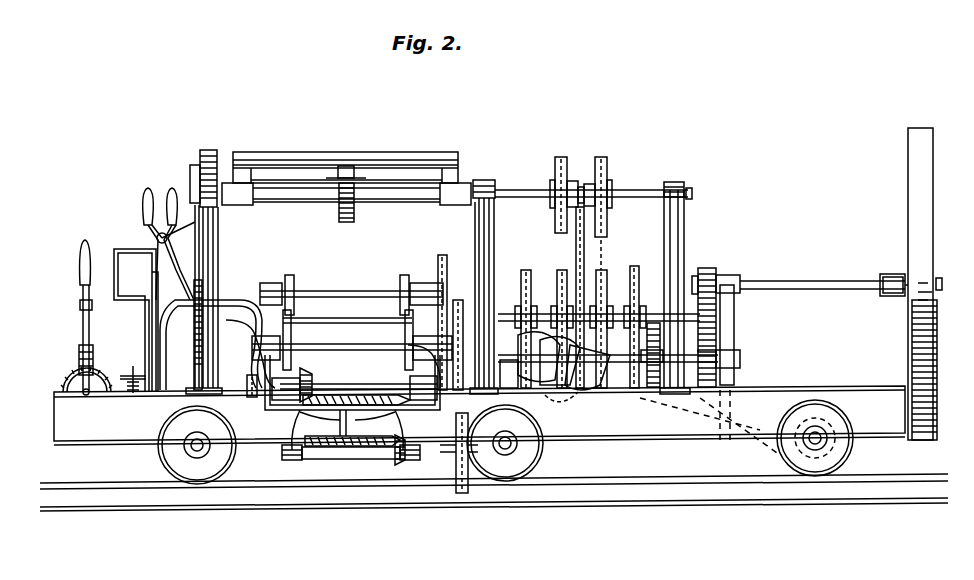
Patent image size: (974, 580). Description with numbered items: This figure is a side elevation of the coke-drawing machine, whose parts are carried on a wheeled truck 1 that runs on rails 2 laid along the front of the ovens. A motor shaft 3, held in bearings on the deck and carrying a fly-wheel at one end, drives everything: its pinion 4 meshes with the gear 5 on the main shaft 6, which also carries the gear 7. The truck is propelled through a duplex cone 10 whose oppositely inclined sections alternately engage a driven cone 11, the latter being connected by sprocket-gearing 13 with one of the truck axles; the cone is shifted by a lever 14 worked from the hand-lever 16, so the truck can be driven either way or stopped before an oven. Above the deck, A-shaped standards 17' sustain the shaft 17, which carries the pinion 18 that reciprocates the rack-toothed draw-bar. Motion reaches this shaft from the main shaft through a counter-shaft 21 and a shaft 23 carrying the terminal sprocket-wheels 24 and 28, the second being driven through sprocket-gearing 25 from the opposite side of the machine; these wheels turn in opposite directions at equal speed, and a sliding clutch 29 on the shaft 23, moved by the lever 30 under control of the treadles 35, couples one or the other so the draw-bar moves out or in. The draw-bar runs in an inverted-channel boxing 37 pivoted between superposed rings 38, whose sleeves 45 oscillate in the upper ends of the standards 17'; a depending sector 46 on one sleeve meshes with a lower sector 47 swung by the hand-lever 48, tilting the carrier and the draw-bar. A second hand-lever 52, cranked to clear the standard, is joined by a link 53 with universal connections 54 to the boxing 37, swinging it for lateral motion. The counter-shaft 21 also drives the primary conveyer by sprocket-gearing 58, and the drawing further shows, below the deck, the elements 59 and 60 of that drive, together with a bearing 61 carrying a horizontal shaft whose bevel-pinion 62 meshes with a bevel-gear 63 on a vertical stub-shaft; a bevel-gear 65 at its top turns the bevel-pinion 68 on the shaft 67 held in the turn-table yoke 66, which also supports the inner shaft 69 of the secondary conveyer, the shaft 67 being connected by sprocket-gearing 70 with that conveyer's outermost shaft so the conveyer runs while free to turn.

The wheeled truck 1 is at (125, 433).
The rails 2 is at (100, 492).
The motor shaft 3 is at (780, 283).
The pinion 4 is at (706, 268).
The gear 5 is at (730, 327).
The main shaft 6 is at (655, 372).
The gear 7 is at (670, 385).
The duplex cone 10 is at (552, 392).
The cone 11 is at (524, 336).
The sprocket-gearing 13 is at (762, 403).
The lever 14 is at (580, 388).
The hand-lever 16 is at (83, 340).
The shaft 17 is at (346, 218).
The A-shaped standards 17' is at (359, 295).
The pinion 18 is at (347, 222).
The counter-shaft 21 is at (530, 285).
The shaft 23 is at (634, 190).
The terminal sprocket-wheel 24 is at (557, 162).
The sprocket-gearing 25 is at (639, 280).
The terminal sprocket-wheel 28 is at (604, 162).
The clutch 29 is at (582, 184).
The lever 30 is at (584, 250).
The treadles 35 is at (133, 374).
The boxing or guide 37 is at (352, 170).
The superposed rings 38 is at (478, 180).
The sleeves 45 is at (248, 205).
The depending sector 46 is at (208, 246).
The sector 47 is at (200, 368).
The hand-lever 48 is at (192, 300).
The hand-lever 52 is at (148, 322).
The link 53 is at (160, 245).
The ball-and-socket joints 54 is at (162, 200).
The sprocket-gearing 58 is at (438, 272).
The disk 59 is at (458, 405).
The shaft 60 is at (352, 459).
The bearing 61 is at (292, 462).
The bevel-pinion 62 is at (400, 466).
The bevel-gear 63 is at (312, 447).
The bevel-gear 65 is at (352, 394).
The yoke 66 is at (283, 412).
The shaft 67 is at (338, 380).
The bevel-pinion 68 is at (305, 372).
The inner shaft 69 is at (358, 345).
The sprocket-gearing 70 is at (248, 395).